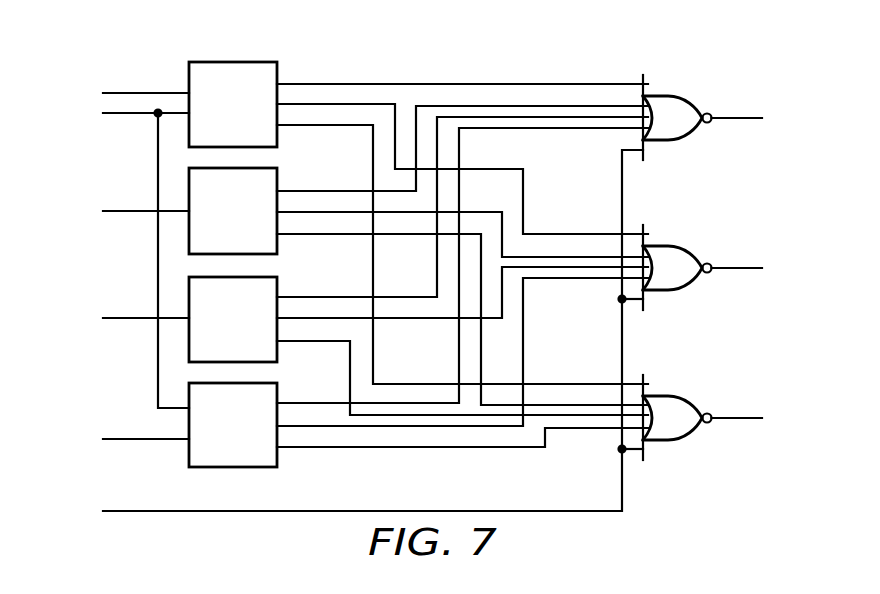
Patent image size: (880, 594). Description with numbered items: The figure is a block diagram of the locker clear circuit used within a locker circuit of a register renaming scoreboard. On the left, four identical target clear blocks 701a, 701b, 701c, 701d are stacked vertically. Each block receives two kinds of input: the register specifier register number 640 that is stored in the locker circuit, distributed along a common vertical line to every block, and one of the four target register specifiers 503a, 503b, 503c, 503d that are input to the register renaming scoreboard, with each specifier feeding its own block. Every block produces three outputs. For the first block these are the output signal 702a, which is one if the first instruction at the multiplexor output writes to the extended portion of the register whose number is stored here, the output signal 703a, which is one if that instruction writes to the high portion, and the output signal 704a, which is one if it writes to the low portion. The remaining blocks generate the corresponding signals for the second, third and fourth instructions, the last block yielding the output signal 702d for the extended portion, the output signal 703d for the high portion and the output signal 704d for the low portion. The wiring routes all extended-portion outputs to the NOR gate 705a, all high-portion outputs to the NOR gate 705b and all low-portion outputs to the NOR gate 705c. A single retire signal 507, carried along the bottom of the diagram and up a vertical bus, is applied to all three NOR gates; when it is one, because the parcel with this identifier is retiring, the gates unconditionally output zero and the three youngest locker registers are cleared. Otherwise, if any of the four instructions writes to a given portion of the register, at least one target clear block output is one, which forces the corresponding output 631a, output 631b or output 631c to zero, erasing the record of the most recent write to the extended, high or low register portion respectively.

The target register specifier 503a is at (125, 92).
The target register specifier 503b is at (125, 213).
The target register specifier 503c is at (125, 320).
The target register specifier 503d is at (125, 437).
The register specifier register number 640 is at (123, 117).
The retire signal 507 is at (125, 510).
The target clear block 701a is at (260, 117).
The target clear block 701b is at (260, 224).
The target clear block 701c is at (260, 332).
The target clear block 701d is at (260, 438).
The output signal 702a is at (325, 83).
The output signal 702d is at (323, 402).
The output signal 703a is at (523, 203).
The output signal 703d is at (523, 342).
The output signal 704a is at (323, 128).
The output signal 704d is at (323, 450).
The NOR gate 705a is at (698, 78).
The NOR gate 705b is at (698, 228).
The NOR gate 705c is at (698, 378).
The output of NOR gate 631a is at (733, 120).
The output of NOR gate 631b is at (733, 270).
The output of NOR gate 631c is at (733, 420).